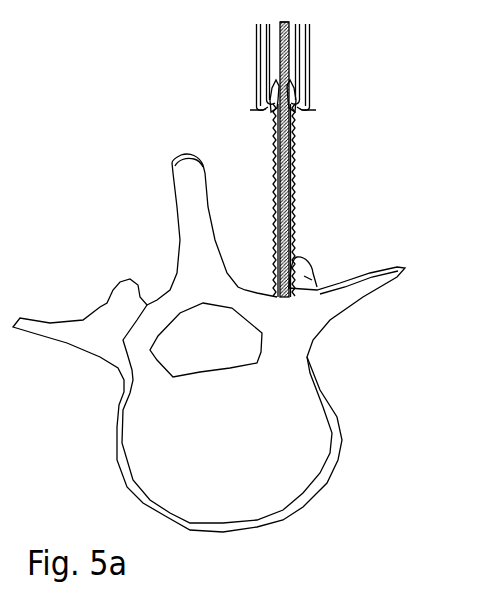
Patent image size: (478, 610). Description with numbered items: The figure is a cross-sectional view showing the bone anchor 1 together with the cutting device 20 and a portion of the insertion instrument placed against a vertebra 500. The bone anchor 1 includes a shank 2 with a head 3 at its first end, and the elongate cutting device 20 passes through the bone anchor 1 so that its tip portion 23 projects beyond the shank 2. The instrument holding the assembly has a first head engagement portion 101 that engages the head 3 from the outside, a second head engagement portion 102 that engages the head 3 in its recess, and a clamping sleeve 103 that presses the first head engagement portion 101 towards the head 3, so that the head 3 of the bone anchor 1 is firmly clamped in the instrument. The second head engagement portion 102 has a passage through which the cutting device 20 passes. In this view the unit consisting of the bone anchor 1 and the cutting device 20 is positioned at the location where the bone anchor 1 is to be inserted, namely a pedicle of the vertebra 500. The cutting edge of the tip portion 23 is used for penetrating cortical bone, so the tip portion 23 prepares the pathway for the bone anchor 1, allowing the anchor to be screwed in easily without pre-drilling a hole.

The vertebra 500 is at (340, 455).
The bone anchor 1 is at (296, 161).
The cutting device 20 is at (284, 48).
The shank 2 is at (274, 191).
The clamping sleeve 103 is at (258, 66).
The second head engagement portion 102 is at (299, 73).
The first head engagement portion 101 is at (300, 110).
The head 3 is at (262, 109).
The tip portion 23 is at (313, 287).